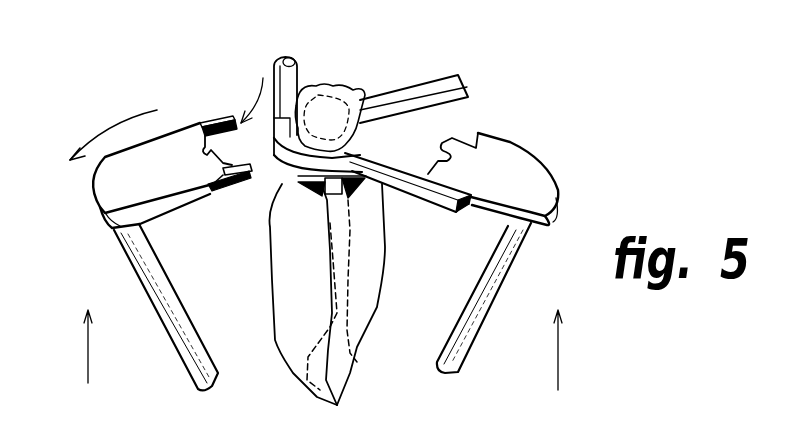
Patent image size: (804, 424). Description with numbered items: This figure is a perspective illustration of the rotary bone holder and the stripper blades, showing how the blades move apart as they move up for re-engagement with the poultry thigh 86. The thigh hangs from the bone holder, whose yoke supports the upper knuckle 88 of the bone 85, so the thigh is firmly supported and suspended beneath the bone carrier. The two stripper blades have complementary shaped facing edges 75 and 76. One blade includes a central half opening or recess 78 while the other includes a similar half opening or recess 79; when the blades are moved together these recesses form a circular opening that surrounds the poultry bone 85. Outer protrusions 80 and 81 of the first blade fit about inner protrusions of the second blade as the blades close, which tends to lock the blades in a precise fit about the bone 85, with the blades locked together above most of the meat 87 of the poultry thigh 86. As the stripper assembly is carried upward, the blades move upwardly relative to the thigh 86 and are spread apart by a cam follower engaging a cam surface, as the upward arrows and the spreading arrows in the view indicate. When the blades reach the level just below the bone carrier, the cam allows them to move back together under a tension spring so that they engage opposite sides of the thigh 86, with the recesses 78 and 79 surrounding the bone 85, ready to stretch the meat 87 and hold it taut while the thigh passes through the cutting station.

The facing edge 75 is at (251, 94).
The facing edge 76 is at (422, 140).
The half opening or recess 78 is at (203, 149).
The half opening or recess 79 is at (438, 151).
The outer protrusion 80 is at (233, 116).
The outer protrusion 81 is at (242, 186).
The bone 85 is at (350, 268).
The poultry thigh 86 is at (253, 263).
The meat 87 is at (273, 297).
The upper knuckle 88 is at (337, 90).